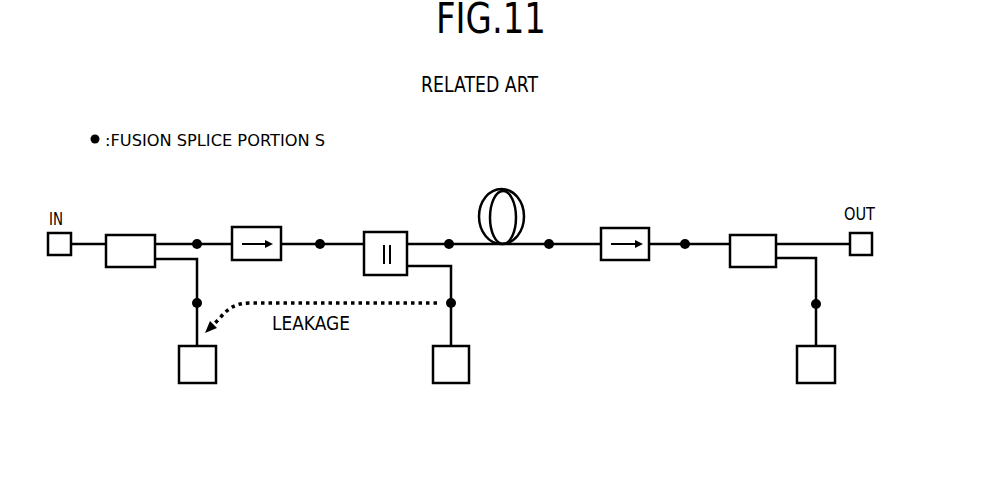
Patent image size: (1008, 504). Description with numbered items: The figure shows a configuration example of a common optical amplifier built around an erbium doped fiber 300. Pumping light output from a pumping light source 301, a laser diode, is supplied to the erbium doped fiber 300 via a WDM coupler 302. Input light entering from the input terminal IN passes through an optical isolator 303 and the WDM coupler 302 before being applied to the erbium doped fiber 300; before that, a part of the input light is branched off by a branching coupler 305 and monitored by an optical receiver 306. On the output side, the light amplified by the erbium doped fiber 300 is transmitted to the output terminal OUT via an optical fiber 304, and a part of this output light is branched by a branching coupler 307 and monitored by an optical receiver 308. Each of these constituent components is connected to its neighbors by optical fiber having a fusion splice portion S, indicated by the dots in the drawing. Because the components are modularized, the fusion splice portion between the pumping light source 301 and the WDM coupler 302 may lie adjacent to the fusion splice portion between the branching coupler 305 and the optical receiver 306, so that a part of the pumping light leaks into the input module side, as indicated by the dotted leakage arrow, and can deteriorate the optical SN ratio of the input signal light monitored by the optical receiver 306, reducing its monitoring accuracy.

The erbium doped fiber 300 is at (499, 189).
The pumping light source 301 is at (452, 383).
The WDM coupler 302 is at (381, 232).
The optical isolator 303 is at (252, 227).
The optical fiber 304 is at (619, 228).
The branching coupler 305 is at (128, 235).
The optical receiver 306 is at (199, 383).
The branching coupler 307 is at (745, 235).
The optical receiver 308 is at (819, 383).